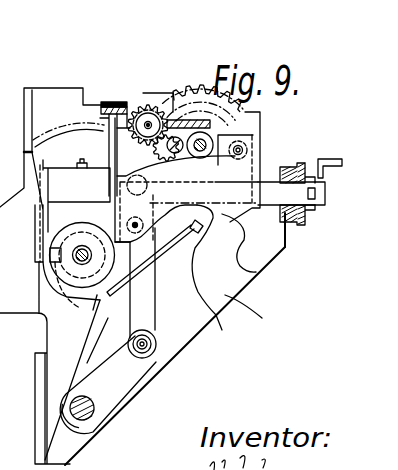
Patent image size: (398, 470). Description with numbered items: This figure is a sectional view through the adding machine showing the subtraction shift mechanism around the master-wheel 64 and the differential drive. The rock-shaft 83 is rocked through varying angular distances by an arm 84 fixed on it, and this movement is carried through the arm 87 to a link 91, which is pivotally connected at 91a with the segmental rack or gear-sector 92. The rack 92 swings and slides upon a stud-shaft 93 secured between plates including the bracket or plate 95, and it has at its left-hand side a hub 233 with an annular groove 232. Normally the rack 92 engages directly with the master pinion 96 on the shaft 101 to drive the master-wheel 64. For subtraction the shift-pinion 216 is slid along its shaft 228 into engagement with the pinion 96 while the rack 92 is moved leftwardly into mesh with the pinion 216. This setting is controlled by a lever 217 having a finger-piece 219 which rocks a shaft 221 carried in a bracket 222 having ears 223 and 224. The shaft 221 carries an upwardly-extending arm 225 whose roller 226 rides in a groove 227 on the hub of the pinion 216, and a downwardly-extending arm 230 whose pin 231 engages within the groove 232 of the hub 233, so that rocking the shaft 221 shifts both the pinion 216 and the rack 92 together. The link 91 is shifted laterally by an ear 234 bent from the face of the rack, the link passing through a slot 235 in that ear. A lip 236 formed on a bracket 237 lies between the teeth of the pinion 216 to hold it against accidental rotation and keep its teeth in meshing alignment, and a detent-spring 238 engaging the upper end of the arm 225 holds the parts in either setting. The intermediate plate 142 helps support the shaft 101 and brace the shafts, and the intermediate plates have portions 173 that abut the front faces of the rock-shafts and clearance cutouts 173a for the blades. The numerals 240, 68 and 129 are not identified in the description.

The bracket or plate 95 is at (52, 93).
The housing 240 is at (8, 113).
The detent-spring 238 is at (112, 102).
The upwardly-extending arm 225 is at (113, 164).
The roller 226 is at (109, 116).
The segmental rack or gear-sector 92 is at (68, 224).
The ear 224 is at (110, 199).
The downwardly-extending arm 230 is at (43, 234).
The pin 231 is at (38, 270).
The annular groove 232 is at (67, 288).
The stud-shaft 93 is at (78, 250).
The hub 233 is at (83, 231).
The shift-pinion 216 is at (139, 105).
The shaft 228 is at (148, 121).
The finger-piece 219 is at (152, 102).
The groove 227 is at (164, 104).
The master-wheel 64 is at (196, 110).
The master pinion 96 is at (204, 110).
The lip 236 is at (168, 126).
The bracket 222 is at (186, 180).
The bracket 237 is at (204, 152).
The shaft 101 is at (226, 156).
The ear 223 is at (262, 174).
The shaft 221 is at (270, 205).
The collar 68 is at (300, 227).
The lever 217 is at (318, 208).
The link 129 is at (287, 222).
The portion 173 is at (258, 274).
The clearance cutout 173a is at (256, 313).
The pivotal connection 91a is at (154, 235).
The slot 235 is at (195, 244).
The ear 234 is at (168, 258).
The link 91 is at (142, 283).
The intermediate plate 142 is at (173, 355).
The arm 87 is at (108, 385).
The rock-shaft 83 is at (97, 397).
The arm 84 is at (90, 362).